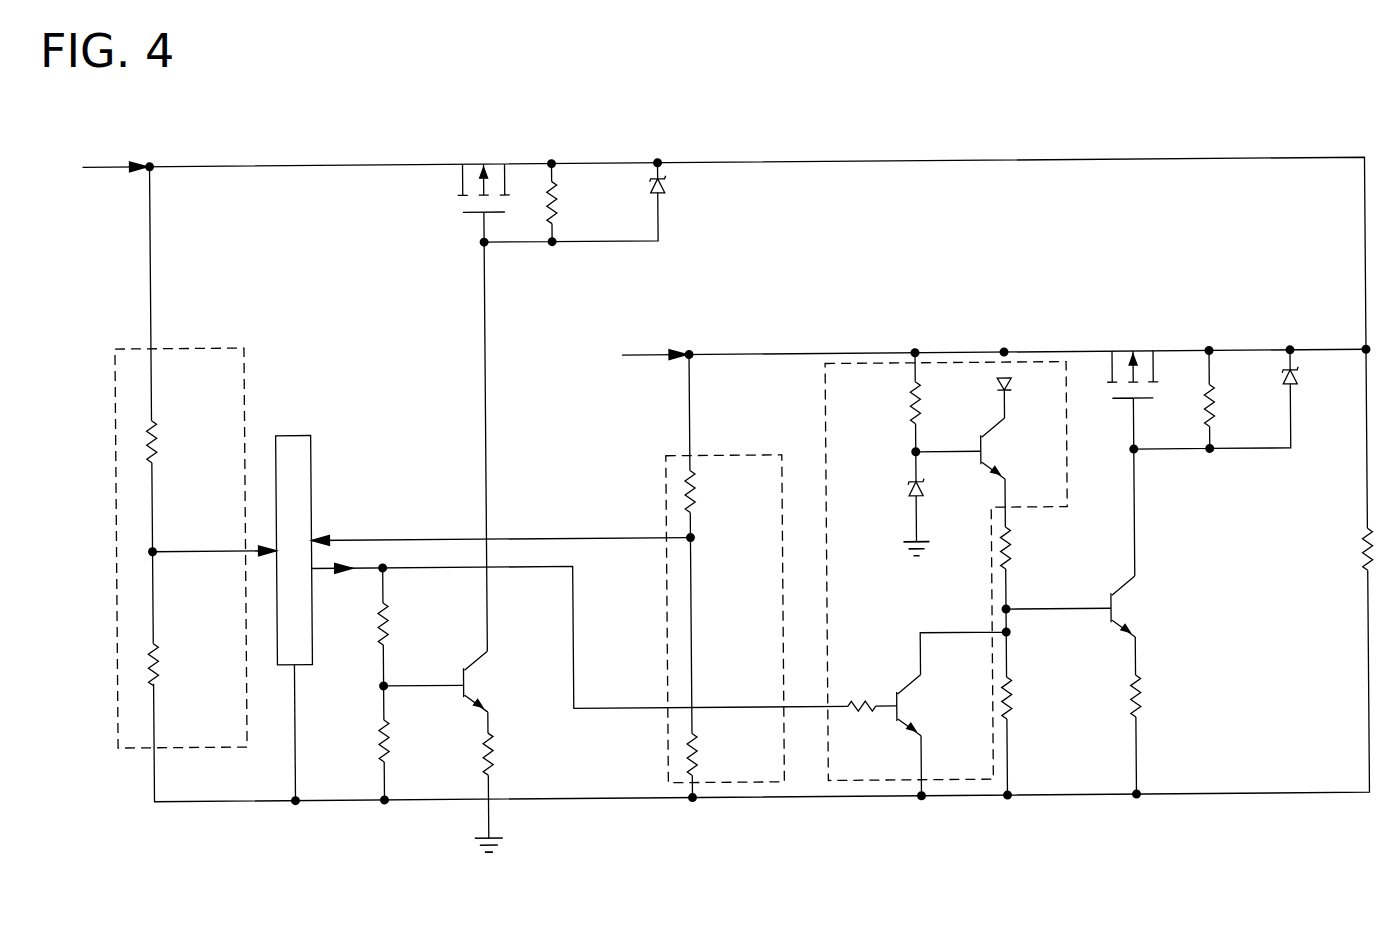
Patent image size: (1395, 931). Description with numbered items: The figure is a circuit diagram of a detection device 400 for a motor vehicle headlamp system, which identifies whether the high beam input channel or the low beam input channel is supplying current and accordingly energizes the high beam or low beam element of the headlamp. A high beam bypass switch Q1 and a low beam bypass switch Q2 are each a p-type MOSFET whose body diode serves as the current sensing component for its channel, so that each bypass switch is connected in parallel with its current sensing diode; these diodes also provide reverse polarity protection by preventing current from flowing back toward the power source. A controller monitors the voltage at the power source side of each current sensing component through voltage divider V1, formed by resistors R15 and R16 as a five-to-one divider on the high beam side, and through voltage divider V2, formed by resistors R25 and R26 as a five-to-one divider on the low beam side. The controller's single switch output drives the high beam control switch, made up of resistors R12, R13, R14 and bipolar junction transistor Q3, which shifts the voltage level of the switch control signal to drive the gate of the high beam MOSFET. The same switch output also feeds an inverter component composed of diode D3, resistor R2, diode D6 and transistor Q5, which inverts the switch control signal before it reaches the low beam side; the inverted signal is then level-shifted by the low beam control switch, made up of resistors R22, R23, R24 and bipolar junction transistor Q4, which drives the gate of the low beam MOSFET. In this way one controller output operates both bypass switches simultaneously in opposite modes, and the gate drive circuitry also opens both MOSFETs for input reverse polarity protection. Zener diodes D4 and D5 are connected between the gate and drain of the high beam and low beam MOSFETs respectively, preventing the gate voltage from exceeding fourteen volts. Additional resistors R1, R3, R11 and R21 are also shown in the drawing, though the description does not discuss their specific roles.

The detection device 400 is at (296, 100).
The voltage divider V1 is at (207, 344).
The voltage divider V2 is at (753, 450).
The high beam bypass switch Q1 is at (464, 183).
The low beam bypass switch Q2 is at (1120, 383).
The high beam control switch Q3 is at (472, 671).
The low beam control switch Q4 is at (1117, 598).
The inverter transistor Q5 is at (904, 694).
The inverter diode D3 is at (894, 490).
The high beam overvoltage protection component D4 is at (681, 181).
The low beam overvoltage protection component D5 is at (1312, 371).
The inverter diode D6 is at (1024, 382).
The resistor R1 is at (1347, 549).
The inverter resistor R2 is at (869, 740).
The resistor 10k R3 is at (940, 399).
The resistor 10k R11 is at (579, 195).
The high beam control switch resistor R12 is at (411, 624).
The high beam control switch resistor R13 is at (414, 739).
The high beam control switch resistor R14 is at (519, 745).
The voltage divider resistor R15 is at (180, 441).
The voltage divider resistor R16 is at (191, 666).
The resistor 10k R21 is at (1236, 388).
The low beam control switch resistor R22 is at (1032, 545).
The low beam control switch resistor R23 is at (1036, 698).
The low beam control switch resistor R24 is at (1167, 698).
The voltage divider resistor R25 is at (720, 493).
The voltage divider resistor R26 is at (730, 745).